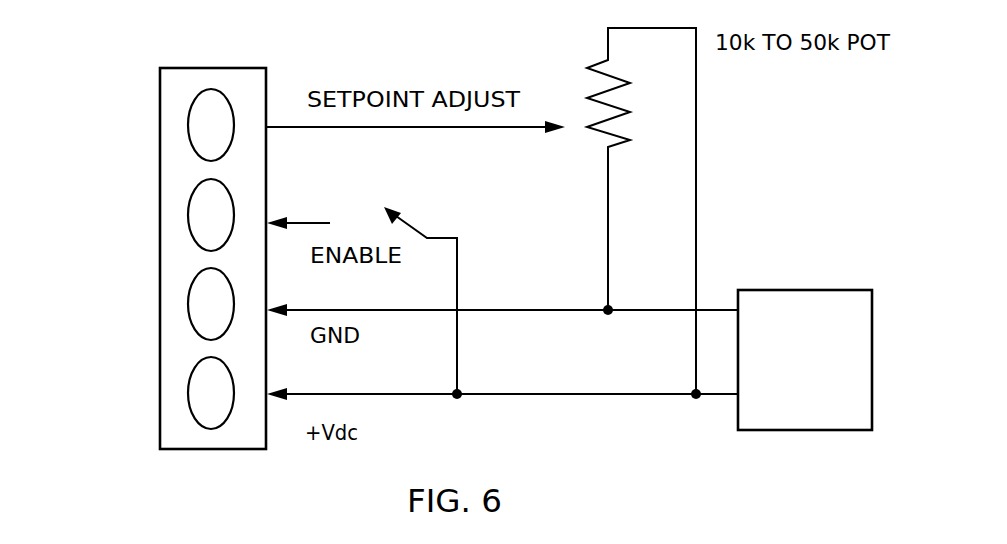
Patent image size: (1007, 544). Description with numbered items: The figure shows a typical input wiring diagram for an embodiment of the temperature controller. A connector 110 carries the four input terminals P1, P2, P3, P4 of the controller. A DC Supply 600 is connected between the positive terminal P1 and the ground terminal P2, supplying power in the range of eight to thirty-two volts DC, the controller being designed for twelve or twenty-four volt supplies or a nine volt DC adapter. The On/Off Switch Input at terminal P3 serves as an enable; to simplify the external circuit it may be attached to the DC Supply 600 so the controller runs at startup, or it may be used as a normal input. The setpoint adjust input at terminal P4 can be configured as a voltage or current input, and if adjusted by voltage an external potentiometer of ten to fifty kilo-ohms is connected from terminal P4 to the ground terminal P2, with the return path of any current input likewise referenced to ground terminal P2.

The connector 110 is at (190, 68).
The setpoint input terminal P4 is at (160, 125).
The On/Off Switch Input terminal P3 is at (160, 215).
The ground terminal P2 is at (160, 307).
The positive supply terminal P1 is at (160, 392).
The DC Supply 600 is at (797, 290).